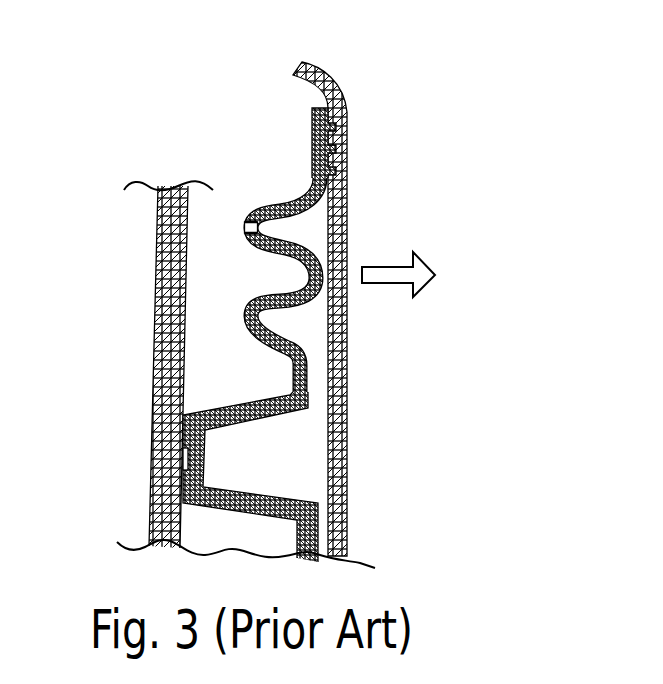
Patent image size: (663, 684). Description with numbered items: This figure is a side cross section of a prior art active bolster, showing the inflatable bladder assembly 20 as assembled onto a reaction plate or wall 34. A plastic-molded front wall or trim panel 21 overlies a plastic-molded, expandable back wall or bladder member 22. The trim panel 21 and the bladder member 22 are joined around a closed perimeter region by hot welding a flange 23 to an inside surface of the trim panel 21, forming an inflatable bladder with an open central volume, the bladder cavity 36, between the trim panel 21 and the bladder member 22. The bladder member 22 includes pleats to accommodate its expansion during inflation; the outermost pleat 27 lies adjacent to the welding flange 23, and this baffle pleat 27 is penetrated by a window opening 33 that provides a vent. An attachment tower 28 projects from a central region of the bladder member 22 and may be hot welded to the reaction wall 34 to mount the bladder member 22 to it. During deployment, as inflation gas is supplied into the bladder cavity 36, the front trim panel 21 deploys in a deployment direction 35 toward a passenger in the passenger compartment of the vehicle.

The inflatable bladder assembly 20 is at (254, 315).
The trim panel 21 is at (347, 195).
The bladder member 22 is at (264, 267).
The flange 23 is at (312, 143).
The outermost pleat 27 is at (276, 204).
The attachment tower 28 is at (235, 404).
The window opening 33 is at (244, 229).
The reaction wall 34 is at (157, 303).
The deployment direction 35 is at (388, 264).
The bladder cavity 36 is at (310, 323).